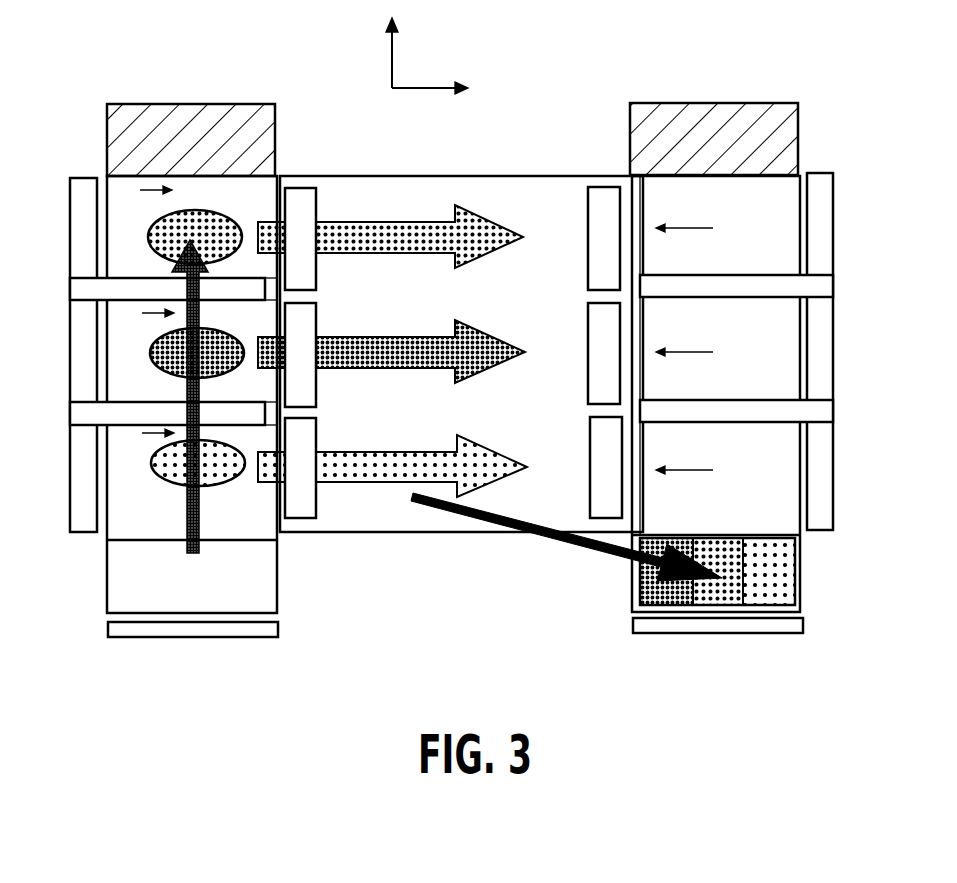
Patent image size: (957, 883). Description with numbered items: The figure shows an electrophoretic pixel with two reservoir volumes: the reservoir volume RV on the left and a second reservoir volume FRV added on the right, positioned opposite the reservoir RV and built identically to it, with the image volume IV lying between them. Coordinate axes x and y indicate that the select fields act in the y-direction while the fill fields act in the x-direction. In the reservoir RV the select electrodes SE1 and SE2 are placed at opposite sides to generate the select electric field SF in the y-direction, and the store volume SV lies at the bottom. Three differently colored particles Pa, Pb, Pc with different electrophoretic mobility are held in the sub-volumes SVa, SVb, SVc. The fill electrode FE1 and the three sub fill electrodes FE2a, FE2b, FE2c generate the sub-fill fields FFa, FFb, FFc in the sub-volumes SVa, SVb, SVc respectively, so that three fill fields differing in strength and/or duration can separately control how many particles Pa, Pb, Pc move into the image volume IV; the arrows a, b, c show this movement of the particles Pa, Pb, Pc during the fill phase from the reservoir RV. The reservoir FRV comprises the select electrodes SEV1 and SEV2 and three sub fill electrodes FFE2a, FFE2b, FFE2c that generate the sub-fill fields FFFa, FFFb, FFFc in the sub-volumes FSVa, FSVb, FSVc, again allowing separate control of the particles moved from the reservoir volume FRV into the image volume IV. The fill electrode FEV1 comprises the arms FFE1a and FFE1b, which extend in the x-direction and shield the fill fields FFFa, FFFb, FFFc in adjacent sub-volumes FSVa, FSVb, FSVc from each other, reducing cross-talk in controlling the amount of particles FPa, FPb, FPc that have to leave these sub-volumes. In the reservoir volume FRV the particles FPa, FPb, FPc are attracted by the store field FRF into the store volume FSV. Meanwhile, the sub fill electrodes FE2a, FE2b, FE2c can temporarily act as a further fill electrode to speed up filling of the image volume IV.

The select electrode SE2 is at (217, 135).
The select electrode SEV2 is at (746, 134).
The select electrode SE1 is at (135, 628).
The select electrode SEV1 is at (755, 635).
The store volume SV is at (192, 394).
The reservoir volume RV is at (107, 557).
The fill electrode FE1 is at (53, 355).
The fill electrode FEV1 is at (861, 351).
The sub fill electrode FE2a is at (316, 517).
The sub fill electrode FE2b is at (316, 400).
The sub fill electrode FE2c is at (316, 287).
The sub fill electrode FFE2a is at (590, 498).
The sub fill electrode FFE2b is at (588, 398).
The sub fill electrode FFE2c is at (588, 282).
The arm FFE1a is at (690, 400).
The arm FFE1b is at (690, 276).
The sub-volume SVa is at (192, 482).
The sub-volume SVb is at (192, 351).
The sub-volume SVc is at (192, 227).
The sub-volume FSVa is at (720, 478).
The sub-volume FSVb is at (720, 348).
The sub-volume FSVc is at (720, 225).
The store volume FSV is at (717, 571).
The particles Pa is at (153, 475).
The particles Pb is at (153, 362).
The particles Pc is at (153, 245).
The particles FPa is at (771, 538).
The particles FPb is at (667, 538).
The particles FPc is at (717, 538).
The select electric field SF is at (187, 505).
The sub-fill field FFa is at (142, 442).
The sub-fill field FFb is at (142, 322).
The sub-fill field FFc is at (141, 199).
The sub-fill field FFFa is at (683, 456).
The sub-fill field FFFb is at (683, 339).
The sub-fill field FFFc is at (683, 215).
The store field FRF is at (487, 516).
The reservoir volume FRV is at (808, 553).
The image volume IV is at (551, 176).
The arrow a is at (386, 452).
The arrow b is at (386, 337).
The arrow c is at (386, 222).
The x-direction x is at (430, 102).
The y-direction y is at (382, 53).